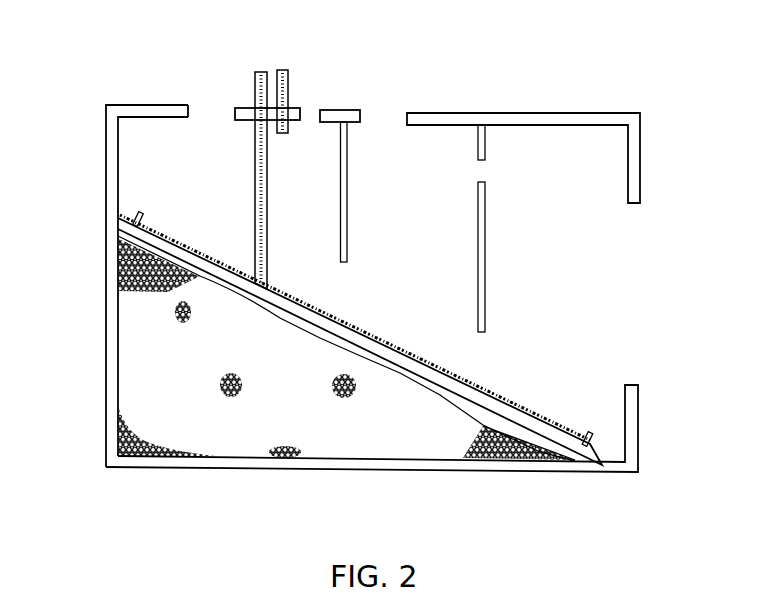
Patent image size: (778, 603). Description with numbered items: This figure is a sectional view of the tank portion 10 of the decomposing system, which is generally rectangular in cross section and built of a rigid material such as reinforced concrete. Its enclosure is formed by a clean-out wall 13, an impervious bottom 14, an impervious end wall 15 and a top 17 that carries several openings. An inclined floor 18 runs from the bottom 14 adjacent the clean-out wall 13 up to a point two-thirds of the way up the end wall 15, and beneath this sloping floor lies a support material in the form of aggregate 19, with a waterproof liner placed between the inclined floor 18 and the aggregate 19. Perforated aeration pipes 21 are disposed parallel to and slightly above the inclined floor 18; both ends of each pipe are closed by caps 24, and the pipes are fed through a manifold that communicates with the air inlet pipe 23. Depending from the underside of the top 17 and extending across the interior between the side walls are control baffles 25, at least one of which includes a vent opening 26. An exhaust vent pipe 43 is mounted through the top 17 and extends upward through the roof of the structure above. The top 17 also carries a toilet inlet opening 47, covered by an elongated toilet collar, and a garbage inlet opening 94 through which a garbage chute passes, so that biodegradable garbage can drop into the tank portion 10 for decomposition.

The tank portion 10 is at (662, 125).
The clean-out wall 13 is at (635, 195).
The impervious bottom 14 is at (330, 468).
The impervious end wall 15 is at (106, 363).
The top 17 is at (447, 112).
The inclined floor 18 is at (392, 355).
The aggregate 19 is at (262, 443).
The perforated aeration pipes 21 is at (520, 392).
The air inlet pipe 23 is at (254, 73).
The caps 24 is at (134, 213).
The control baffles 25 is at (482, 312).
The vent opening 26 is at (478, 172).
The exhaust vent pipe 43 is at (292, 112).
The toilet inlet opening 47 is at (217, 117).
The garbage inlet opening 94 is at (310, 110).